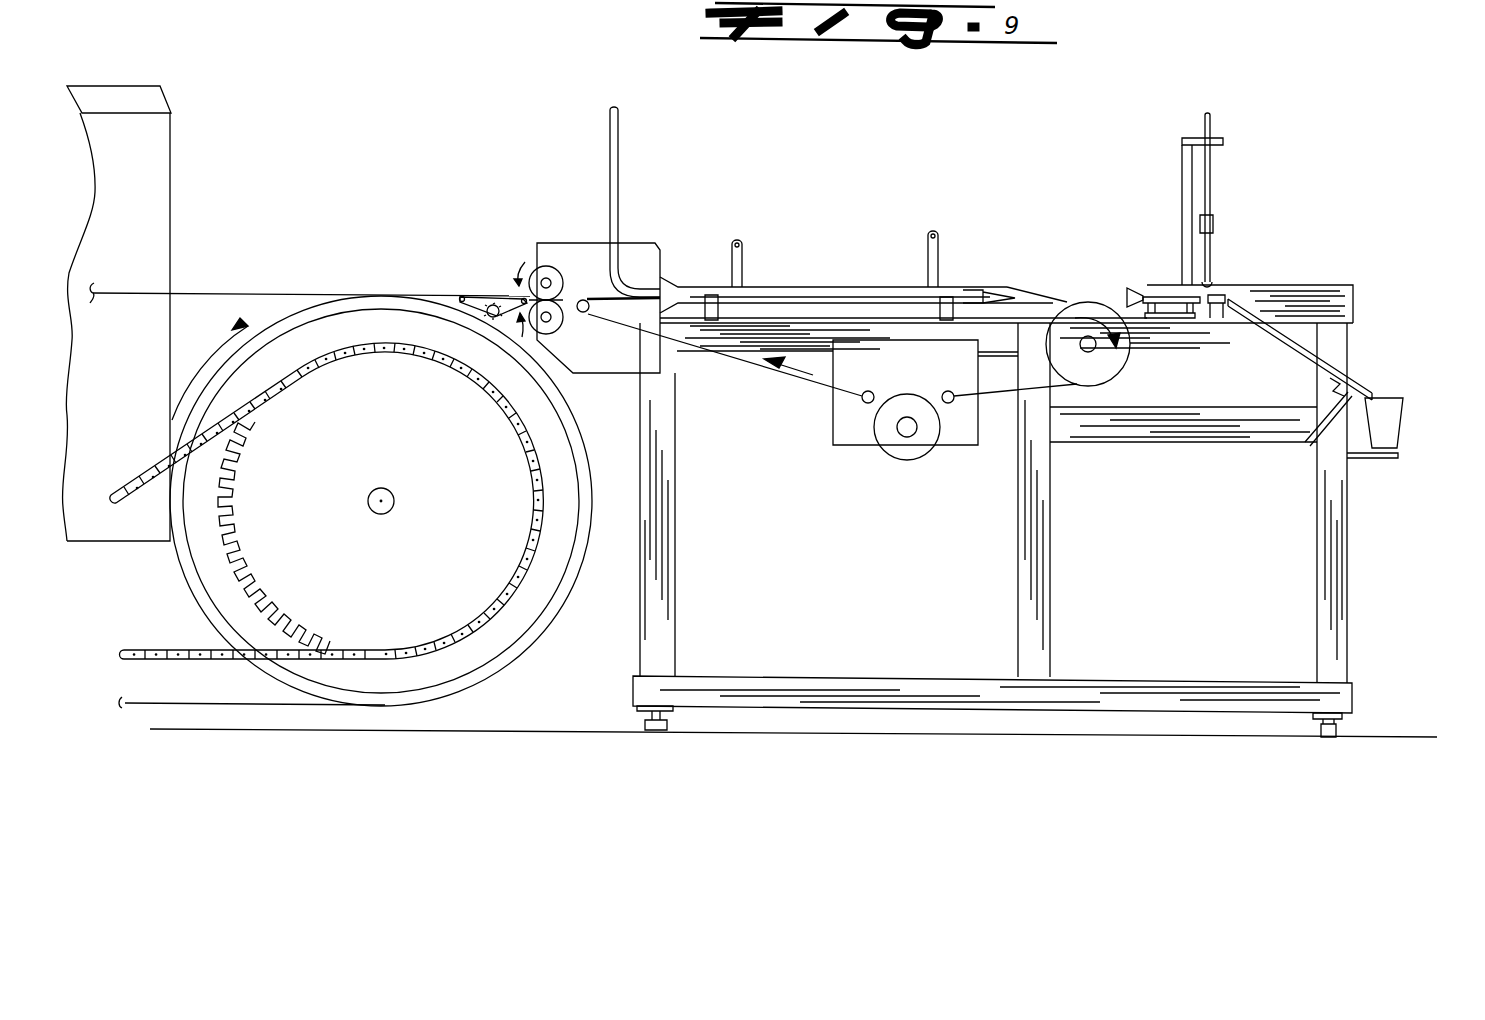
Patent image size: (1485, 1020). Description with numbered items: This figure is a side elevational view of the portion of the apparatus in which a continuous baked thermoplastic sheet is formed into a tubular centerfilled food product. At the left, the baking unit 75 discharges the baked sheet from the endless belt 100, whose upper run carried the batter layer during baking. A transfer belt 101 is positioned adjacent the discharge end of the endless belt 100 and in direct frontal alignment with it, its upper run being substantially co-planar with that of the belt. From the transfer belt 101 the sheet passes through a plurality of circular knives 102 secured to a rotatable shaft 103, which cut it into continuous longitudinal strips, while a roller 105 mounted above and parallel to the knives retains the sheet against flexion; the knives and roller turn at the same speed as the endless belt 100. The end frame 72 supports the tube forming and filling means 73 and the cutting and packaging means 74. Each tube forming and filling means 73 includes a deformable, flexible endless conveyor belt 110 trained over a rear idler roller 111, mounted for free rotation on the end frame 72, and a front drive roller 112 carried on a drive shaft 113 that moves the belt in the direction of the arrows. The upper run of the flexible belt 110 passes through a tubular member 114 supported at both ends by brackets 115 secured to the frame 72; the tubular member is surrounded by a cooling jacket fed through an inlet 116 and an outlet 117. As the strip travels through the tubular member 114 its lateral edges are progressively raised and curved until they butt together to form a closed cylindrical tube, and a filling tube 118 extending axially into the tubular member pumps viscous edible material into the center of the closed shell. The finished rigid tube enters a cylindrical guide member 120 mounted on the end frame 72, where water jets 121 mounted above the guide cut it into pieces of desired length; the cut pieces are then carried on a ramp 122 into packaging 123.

The end frame 72 is at (1338, 658).
The tube forming and filling means 73 is at (880, 185).
The cutting and packaging means 74 is at (1310, 237).
The baking unit 75 is at (172, 113).
The endless belt 100 is at (268, 276).
The transfer belt 101 is at (472, 296).
The circular knives 102 is at (556, 316).
The rotatable shaft 103 is at (547, 318).
The roller 105 is at (548, 282).
The flexible endless conveyor belt 110 is at (750, 366).
The rear idler roller 111 is at (589, 312).
The front drive roller 112 is at (1100, 377).
The drive shaft 113 is at (1097, 350).
The tubular member 114 is at (838, 295).
The brackets 115 is at (718, 305).
The inlet 116 is at (741, 258).
The outlet 117 is at (935, 251).
The filling tube 118 is at (613, 206).
The cylindrical guide member 120 is at (1160, 258).
The water jets 121 is at (1210, 260).
The ramp 122 is at (1357, 387).
The packaging 123 is at (1388, 423).